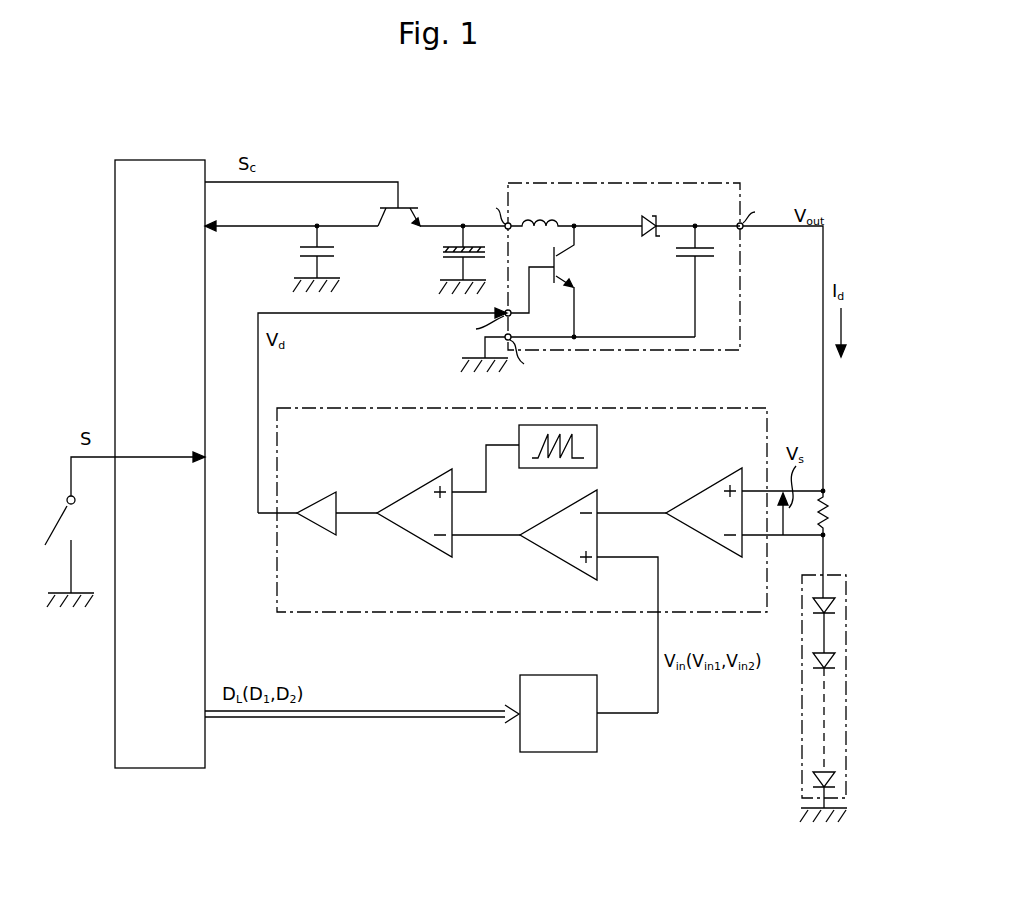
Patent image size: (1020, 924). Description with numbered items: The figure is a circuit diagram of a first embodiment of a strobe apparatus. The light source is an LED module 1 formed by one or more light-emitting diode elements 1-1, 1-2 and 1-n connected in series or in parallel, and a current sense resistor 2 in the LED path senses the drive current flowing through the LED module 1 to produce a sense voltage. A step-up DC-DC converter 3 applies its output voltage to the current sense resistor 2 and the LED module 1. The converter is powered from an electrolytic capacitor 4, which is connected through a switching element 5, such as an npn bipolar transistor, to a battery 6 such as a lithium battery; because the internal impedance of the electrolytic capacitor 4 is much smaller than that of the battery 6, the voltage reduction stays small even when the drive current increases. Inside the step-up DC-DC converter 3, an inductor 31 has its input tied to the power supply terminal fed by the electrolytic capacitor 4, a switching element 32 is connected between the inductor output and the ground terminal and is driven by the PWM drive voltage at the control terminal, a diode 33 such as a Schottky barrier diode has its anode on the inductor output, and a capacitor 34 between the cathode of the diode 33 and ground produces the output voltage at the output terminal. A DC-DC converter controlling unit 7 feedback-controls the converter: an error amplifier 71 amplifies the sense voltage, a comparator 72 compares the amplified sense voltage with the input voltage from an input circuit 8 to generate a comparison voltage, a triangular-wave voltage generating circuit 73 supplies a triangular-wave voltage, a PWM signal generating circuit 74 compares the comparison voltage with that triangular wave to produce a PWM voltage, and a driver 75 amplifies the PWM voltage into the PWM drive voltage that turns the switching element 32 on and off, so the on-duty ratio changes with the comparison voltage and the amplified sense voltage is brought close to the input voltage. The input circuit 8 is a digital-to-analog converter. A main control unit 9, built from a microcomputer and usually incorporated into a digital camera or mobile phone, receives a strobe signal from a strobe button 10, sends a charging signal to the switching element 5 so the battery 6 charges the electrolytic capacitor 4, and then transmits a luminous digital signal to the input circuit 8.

The LED module 1 is at (840, 678).
The light-emitting diode element 1-1 is at (826, 598).
The light-emitting diode element 1-2 is at (826, 653).
The light-emitting diode element 1-n is at (826, 772).
The current sense resistor 2 is at (830, 513).
The step-up DC-DC converter 3 is at (648, 183).
The inductor 31 is at (540, 219).
The switching element 32 is at (564, 260).
The diode 33 is at (652, 216).
The capacitor 34 is at (688, 257).
The electrolytic capacitor 4 is at (443, 249).
The switching element 5 is at (402, 208).
The battery 6 is at (303, 248).
The DC-DC converter controlling unit 7 is at (626, 407).
The error amplifier 71 is at (720, 480).
The comparator 72 is at (566, 508).
The triangular-wave voltage generating circuit 73 is at (597, 447).
The PWM signal generating circuit 74 is at (412, 470).
The driver 75 is at (320, 492).
The input circuit 8 is at (556, 675).
The main control unit 9 is at (154, 160).
The strobe button 10 is at (119, 529).